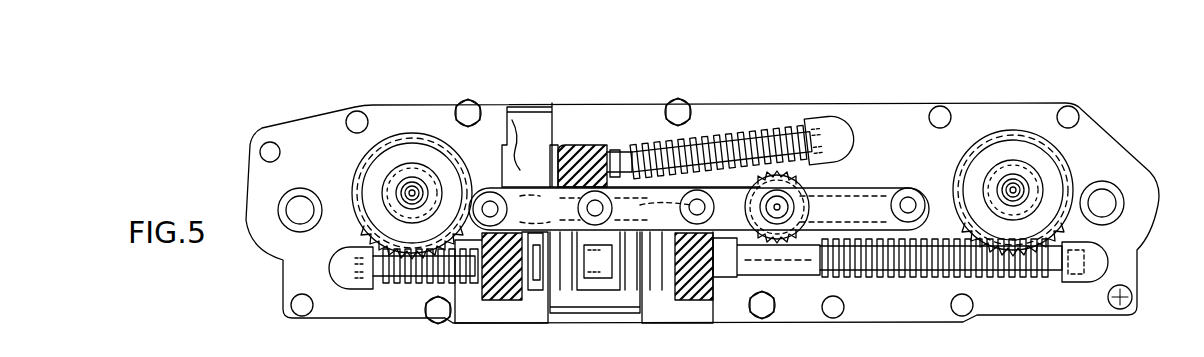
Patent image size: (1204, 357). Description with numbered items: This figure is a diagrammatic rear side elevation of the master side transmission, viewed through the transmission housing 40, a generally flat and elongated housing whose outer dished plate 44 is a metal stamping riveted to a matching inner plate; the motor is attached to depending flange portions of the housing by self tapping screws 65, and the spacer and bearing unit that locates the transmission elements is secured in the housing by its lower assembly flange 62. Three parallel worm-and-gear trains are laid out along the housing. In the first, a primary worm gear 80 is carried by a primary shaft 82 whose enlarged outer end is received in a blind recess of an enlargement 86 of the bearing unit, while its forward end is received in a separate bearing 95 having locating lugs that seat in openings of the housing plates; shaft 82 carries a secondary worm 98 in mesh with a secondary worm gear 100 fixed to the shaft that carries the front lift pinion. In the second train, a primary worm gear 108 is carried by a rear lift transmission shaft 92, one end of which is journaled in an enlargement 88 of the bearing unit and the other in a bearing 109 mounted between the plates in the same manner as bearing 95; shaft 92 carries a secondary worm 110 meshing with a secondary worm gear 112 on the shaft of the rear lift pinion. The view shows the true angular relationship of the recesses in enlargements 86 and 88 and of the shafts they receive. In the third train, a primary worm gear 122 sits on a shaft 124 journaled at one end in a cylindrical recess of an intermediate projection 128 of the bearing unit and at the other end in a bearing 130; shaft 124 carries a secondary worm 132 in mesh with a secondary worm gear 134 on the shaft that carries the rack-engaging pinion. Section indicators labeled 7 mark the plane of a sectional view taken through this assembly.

The section line 7- 7 is at (570, 174).
The transmission housing 40 is at (799, 98).
The outer dished plate 44 is at (952, 156).
The lower assembly flange 62 is at (922, 322).
The self tapping screws 65 is at (466, 100).
The primary worm gear 80 is at (518, 323).
The primary shaft 82 is at (485, 285).
The enlargement 86 is at (585, 290).
The enlargement 88 is at (608, 313).
The rear lift transmission shaft 92 is at (722, 285).
The bearing 95 is at (328, 262).
The secondary worm 98 is at (400, 285).
The secondary worm gear 100 is at (362, 163).
The primary worm gear 108 is at (700, 323).
The bearing 109 is at (1112, 262).
The secondary worm 110 is at (876, 278).
The secondary worm gear 112 is at (1065, 160).
The primary worm gear 122 is at (587, 117).
The shaft 124 is at (620, 150).
The intermediate projection 128 is at (540, 135).
The bearing 130 is at (830, 118).
The secondary worm 132 is at (730, 130).
The secondary worm gear 134 is at (815, 172).